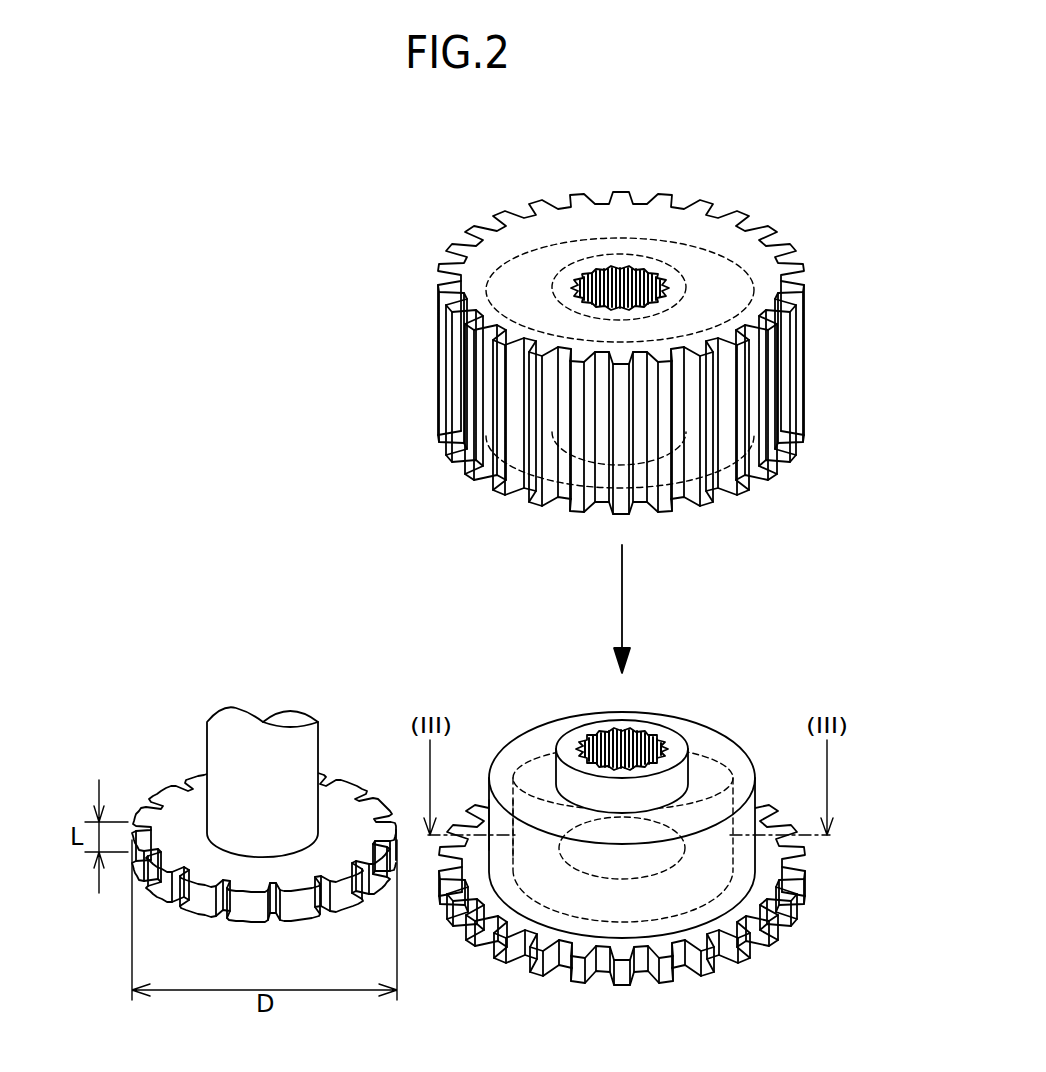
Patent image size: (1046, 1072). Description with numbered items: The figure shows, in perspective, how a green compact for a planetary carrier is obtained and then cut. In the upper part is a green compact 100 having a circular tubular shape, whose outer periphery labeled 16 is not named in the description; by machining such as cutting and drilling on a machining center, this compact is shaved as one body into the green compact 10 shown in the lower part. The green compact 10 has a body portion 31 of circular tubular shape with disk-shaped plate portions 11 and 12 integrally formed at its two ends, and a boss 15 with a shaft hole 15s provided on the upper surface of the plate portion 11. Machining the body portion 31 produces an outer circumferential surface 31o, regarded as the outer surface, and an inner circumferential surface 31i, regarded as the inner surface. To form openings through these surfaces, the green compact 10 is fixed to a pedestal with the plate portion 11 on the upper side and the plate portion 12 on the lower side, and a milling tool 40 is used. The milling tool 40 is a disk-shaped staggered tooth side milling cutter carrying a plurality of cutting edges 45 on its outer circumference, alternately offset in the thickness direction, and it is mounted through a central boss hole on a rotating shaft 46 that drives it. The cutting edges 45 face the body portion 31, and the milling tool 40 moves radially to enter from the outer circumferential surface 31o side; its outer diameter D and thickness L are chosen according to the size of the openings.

The green compact 100 is at (436, 230).
The spline hole 15s is at (620, 276).
The tooth 16 is at (437, 358).
The green compact for the planetary carrier 10 is at (626, 828).
The plate portion 11 is at (627, 847).
The plate portion 12 is at (668, 940).
The boss 15 is at (626, 736).
The body portion 31 is at (745, 826).
The outer circumferential surface 31o is at (490, 817).
The inner circumferential surface 31i is at (530, 898).
The milling tool 40 is at (243, 809).
The cutting edges 45 is at (245, 898).
The rotating shaft 46 is at (305, 757).